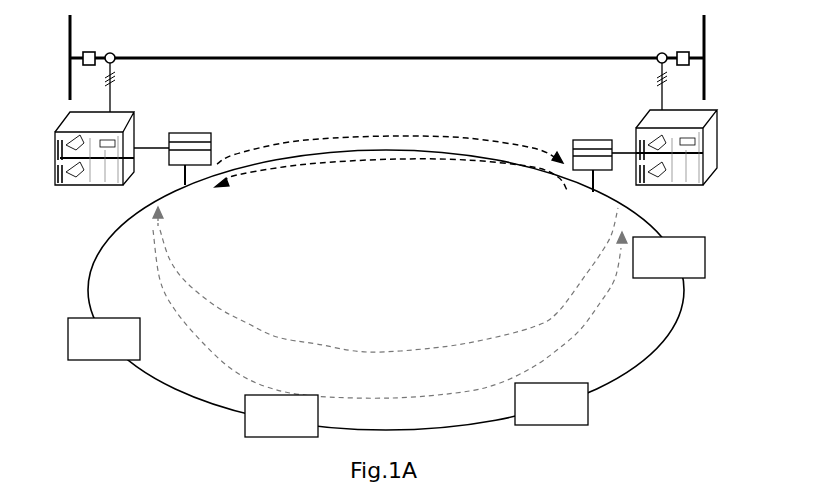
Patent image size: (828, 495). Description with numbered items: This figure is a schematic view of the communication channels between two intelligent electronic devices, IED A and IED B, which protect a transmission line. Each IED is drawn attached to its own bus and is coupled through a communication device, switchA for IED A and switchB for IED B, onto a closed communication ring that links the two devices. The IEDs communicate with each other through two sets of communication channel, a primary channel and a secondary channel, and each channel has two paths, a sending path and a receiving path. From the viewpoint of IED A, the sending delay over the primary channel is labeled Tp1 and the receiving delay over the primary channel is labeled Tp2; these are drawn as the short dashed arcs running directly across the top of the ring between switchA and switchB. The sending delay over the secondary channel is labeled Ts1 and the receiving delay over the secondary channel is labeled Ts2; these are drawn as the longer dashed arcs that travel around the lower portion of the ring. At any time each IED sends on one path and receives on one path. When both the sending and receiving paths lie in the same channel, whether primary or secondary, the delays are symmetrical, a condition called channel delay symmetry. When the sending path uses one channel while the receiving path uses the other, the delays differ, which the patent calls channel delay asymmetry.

The element IED A is at (111, 163).
The element IED B is at (664, 162).
The sending delay via primary channel Tp1 is at (390, 140).
The receiving delay via primary channel Tp2 is at (391, 175).
The sending delay via secondary channel Ts1 is at (390, 314).
The receiving delay via secondary channel Ts2 is at (385, 279).
The communication ring network ring is at (386, 290).
The network switch A switchA is at (190, 159).
The network switch B switchB is at (592, 166).